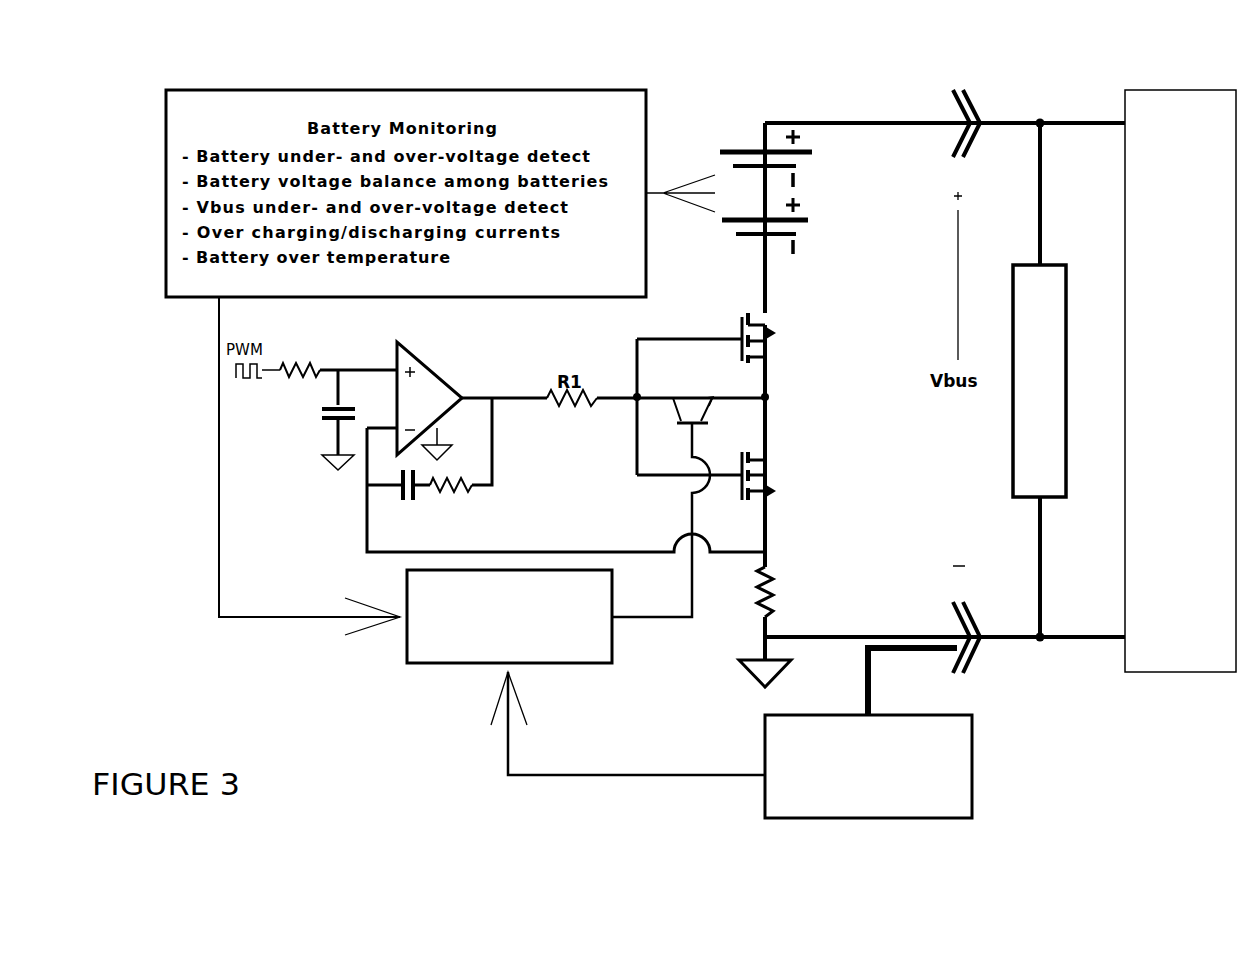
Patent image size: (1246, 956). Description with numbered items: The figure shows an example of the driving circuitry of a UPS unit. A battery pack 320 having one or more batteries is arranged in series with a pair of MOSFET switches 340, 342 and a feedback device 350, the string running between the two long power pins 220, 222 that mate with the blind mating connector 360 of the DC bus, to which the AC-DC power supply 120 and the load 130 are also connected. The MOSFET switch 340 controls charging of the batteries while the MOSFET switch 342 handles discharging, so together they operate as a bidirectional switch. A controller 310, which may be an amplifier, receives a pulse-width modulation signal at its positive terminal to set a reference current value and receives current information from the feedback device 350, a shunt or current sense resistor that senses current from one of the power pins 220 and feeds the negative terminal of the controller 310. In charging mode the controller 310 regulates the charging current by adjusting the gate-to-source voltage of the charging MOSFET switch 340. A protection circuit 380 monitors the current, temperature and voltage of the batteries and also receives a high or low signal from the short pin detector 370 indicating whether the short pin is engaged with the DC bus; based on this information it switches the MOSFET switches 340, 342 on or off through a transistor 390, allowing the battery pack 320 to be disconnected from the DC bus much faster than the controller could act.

The AC-DC power supply 120 is at (1165, 673).
The load 130 is at (1012, 446).
The long power pin 220 is at (956, 98).
The long power pin 222 is at (955, 625).
The controller 310 is at (462, 386).
The battery pack 320 is at (812, 137).
The MOSFET switch 340 is at (780, 338).
The MOSFET switch 342 is at (780, 488).
The feedback device 350 is at (785, 593).
The blind mating connector 360 is at (978, 108).
The short pin detector 370 is at (765, 735).
The protection circuit 380 is at (407, 583).
The transistor 390 is at (686, 412).